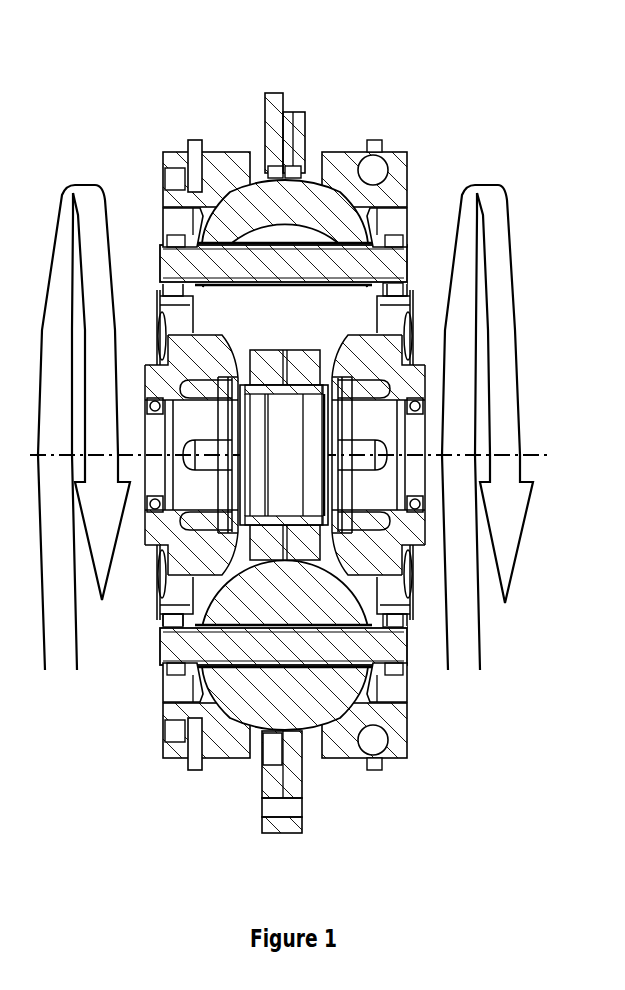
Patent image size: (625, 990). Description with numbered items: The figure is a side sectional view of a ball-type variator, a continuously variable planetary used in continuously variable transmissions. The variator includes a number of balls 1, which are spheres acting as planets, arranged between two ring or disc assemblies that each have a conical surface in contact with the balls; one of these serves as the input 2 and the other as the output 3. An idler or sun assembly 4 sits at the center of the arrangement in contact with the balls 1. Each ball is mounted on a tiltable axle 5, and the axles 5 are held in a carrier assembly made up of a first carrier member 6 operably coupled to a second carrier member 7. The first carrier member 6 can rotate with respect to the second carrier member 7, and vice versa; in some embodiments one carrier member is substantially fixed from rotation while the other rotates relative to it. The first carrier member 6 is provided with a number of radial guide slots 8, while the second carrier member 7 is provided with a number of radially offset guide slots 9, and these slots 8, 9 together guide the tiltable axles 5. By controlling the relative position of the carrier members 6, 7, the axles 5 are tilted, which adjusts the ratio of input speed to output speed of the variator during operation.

The balls 1 is at (250, 731).
The input ring assembly 2 is at (213, 136).
The output ring assembly 3 is at (388, 136).
The idler assembly 4 is at (325, 545).
The tiltable axles 5 is at (162, 664).
The first carrier member 6 is at (266, 98).
The second carrier member 7 is at (306, 132).
The radial guide slots 8 is at (180, 227).
The radially offset guide slots 9 is at (408, 233).